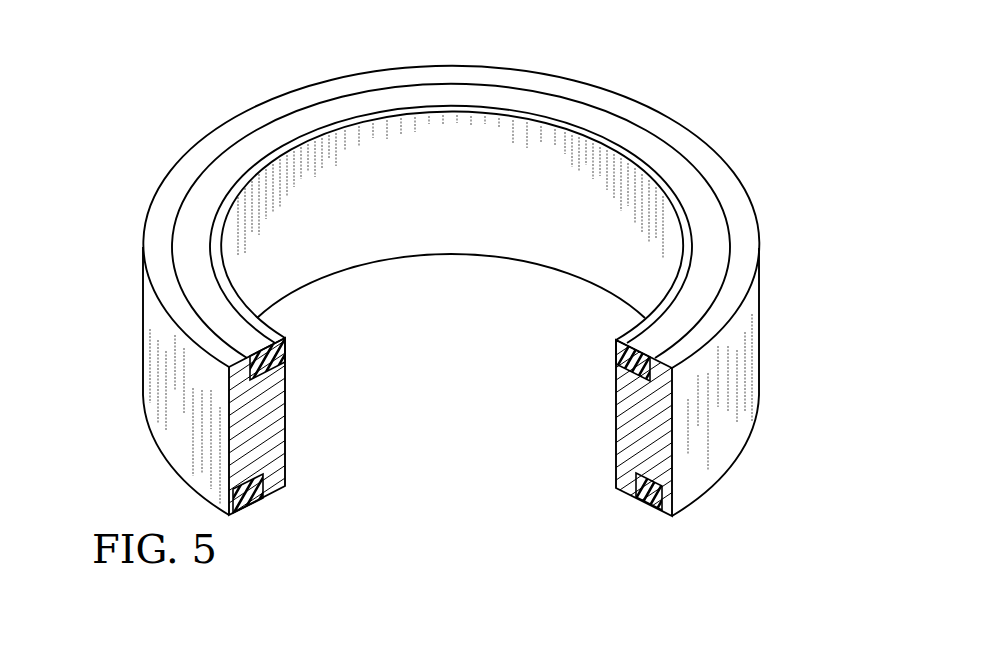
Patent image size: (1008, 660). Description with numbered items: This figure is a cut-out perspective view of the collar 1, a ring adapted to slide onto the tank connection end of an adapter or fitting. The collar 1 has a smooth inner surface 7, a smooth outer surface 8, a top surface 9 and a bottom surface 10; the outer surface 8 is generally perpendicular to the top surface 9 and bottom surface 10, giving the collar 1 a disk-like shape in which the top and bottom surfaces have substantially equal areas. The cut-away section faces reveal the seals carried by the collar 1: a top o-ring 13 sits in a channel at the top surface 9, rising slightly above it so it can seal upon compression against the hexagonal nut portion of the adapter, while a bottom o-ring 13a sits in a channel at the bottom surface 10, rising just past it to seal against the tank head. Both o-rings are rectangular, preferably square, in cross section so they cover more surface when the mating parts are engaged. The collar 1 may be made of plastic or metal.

The collar 1 is at (268, 100).
The inner surface 7 is at (450, 157).
The outer surface 8 is at (176, 396).
The top surface 9 is at (186, 158).
The bottom surface 10 is at (748, 456).
The top o-ring 13 is at (652, 340).
The bottom o-ring 13a is at (642, 497).